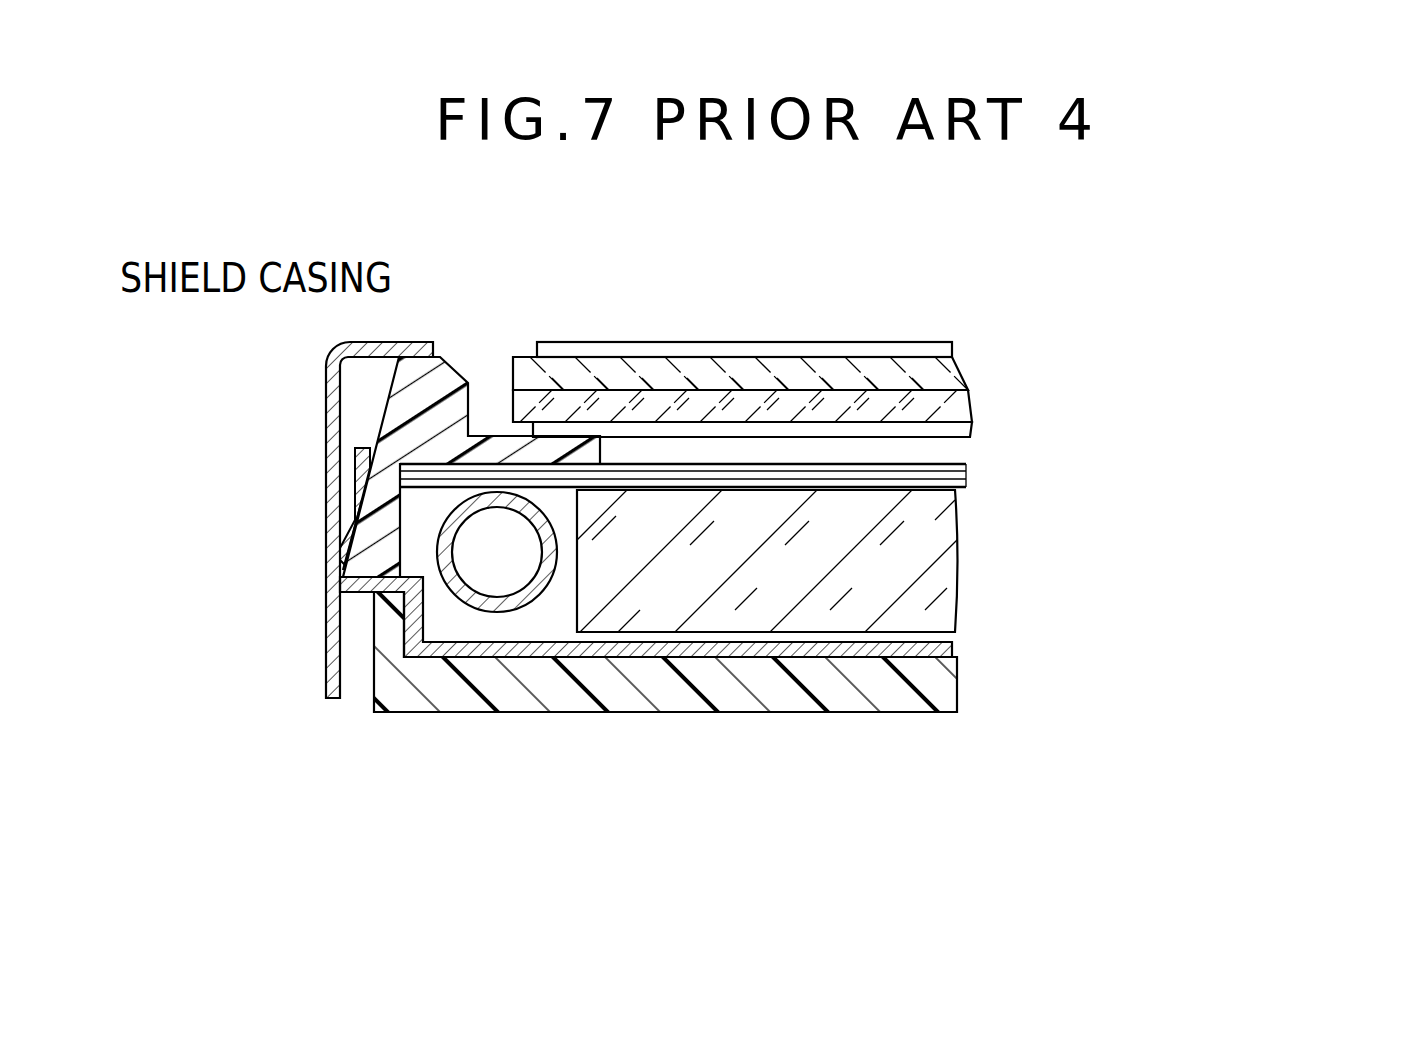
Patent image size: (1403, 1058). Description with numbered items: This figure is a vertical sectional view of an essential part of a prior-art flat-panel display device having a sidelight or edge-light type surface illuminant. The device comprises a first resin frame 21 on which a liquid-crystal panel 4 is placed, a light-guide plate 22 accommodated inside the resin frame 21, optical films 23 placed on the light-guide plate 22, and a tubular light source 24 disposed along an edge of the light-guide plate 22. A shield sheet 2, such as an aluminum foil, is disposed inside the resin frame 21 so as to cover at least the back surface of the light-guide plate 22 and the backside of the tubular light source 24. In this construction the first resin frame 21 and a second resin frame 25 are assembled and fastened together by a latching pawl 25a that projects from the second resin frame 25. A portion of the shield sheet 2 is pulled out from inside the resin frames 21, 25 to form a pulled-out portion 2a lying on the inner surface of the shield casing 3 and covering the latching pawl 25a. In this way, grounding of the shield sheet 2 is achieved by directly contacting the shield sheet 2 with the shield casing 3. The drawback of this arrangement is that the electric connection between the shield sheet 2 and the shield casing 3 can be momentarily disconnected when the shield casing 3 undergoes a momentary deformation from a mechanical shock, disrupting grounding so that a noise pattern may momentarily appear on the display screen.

The shield casing 3 is at (325, 373).
The second resin frame 25 is at (448, 376).
The latching pawl 25a is at (362, 545).
The pulled-out portion 2a is at (362, 483).
The liquid-crystal panel 4 is at (825, 365).
The optical films 23 is at (966, 477).
The light-guide plate 22 is at (940, 578).
The tubular light source 24 is at (503, 610).
The shield sheet 2 is at (942, 640).
The first resin frame 21 is at (937, 682).